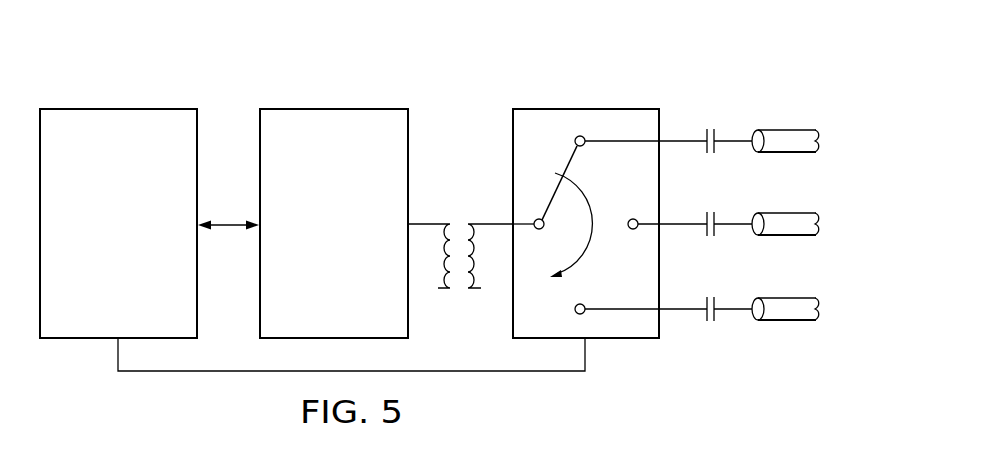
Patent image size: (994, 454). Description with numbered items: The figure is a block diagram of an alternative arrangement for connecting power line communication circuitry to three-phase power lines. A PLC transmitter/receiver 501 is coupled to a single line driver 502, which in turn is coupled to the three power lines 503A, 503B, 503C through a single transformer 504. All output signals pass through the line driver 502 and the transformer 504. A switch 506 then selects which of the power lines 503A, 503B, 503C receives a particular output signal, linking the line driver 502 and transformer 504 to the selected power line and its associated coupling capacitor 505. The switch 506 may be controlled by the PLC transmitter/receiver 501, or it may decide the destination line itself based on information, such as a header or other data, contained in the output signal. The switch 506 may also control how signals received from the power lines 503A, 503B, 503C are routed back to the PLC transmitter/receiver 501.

The PLC transmitter/receiver 501 is at (140, 283).
The line driver 502 is at (313, 258).
The transformer 504 is at (461, 215).
The coupling capacitor 505 is at (711, 124).
The switch 506 is at (600, 100).
The power line 503A is at (789, 129).
The power line 503B is at (789, 212).
The power line 503C is at (789, 321).